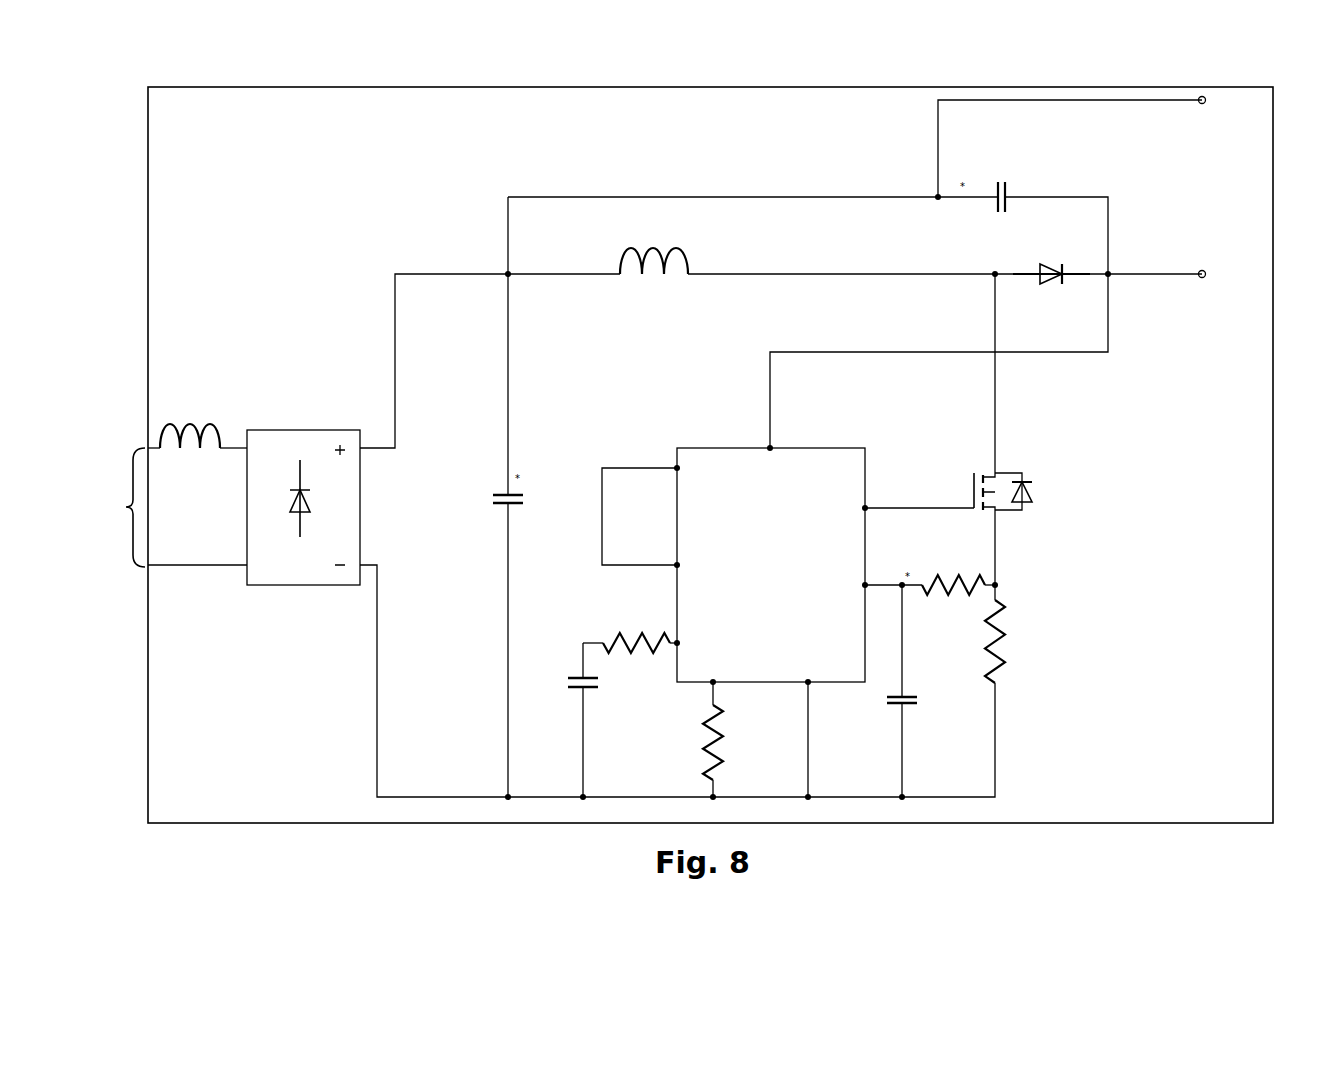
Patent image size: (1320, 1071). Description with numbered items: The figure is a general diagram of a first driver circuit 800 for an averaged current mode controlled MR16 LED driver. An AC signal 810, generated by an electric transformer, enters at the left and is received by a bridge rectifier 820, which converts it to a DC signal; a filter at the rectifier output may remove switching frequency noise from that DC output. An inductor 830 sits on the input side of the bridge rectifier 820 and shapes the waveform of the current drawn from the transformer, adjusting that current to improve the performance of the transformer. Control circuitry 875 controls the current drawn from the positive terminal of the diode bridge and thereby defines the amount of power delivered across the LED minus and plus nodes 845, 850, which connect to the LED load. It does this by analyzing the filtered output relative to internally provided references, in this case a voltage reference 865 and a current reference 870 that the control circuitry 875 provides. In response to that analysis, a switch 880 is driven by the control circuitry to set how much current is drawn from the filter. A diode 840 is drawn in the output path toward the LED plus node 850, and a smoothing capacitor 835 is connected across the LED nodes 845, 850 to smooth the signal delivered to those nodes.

The first driver circuit 800 is at (638, 120).
The AC signal 810 is at (116, 507).
The bridge rectifier 820 is at (303, 592).
The inductor 830 is at (192, 418).
The smoothing capacitor 835 is at (1010, 196).
The diode 840 is at (1035, 265).
The LED − node 845 is at (1206, 102).
The LED + node 850 is at (1206, 276).
The voltage reference (VREF) 865 is at (676, 467).
The current reference (IREF) 870 is at (676, 567).
The control circuitry 875 is at (794, 571).
The switch 880 is at (1030, 472).